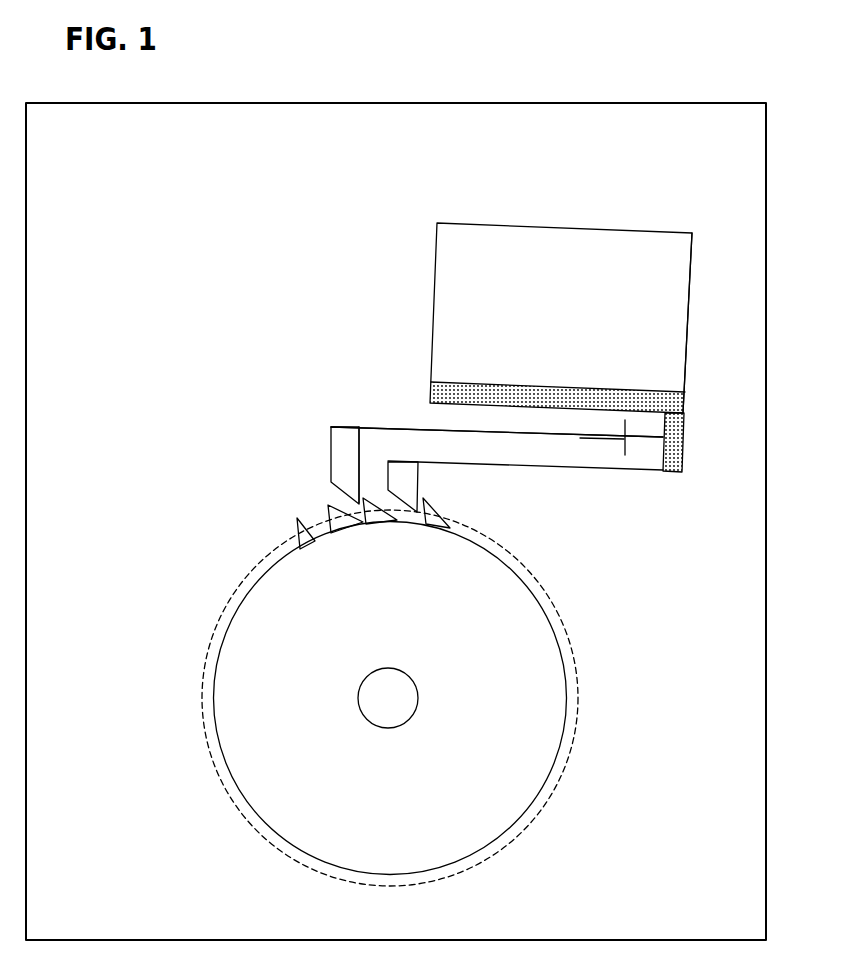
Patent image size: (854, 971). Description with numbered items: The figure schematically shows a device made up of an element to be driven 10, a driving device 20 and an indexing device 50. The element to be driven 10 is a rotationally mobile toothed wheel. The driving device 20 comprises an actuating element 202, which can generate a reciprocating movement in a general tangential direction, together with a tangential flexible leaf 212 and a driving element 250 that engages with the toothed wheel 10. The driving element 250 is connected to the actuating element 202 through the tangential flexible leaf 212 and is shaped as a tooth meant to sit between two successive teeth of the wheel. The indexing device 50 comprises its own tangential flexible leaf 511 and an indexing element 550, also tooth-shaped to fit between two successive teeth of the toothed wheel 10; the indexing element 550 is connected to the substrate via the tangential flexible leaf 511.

The element to be driven 10 is at (487, 800).
The driving device 20 is at (588, 260).
The actuating element 202 is at (670, 337).
The tangential flexible leaf 212 is at (530, 470).
The tangential flexible leaf 511 is at (388, 428).
The indexing device 50 is at (582, 438).
The indexing element 550 is at (340, 455).
The driving element 250 is at (408, 475).